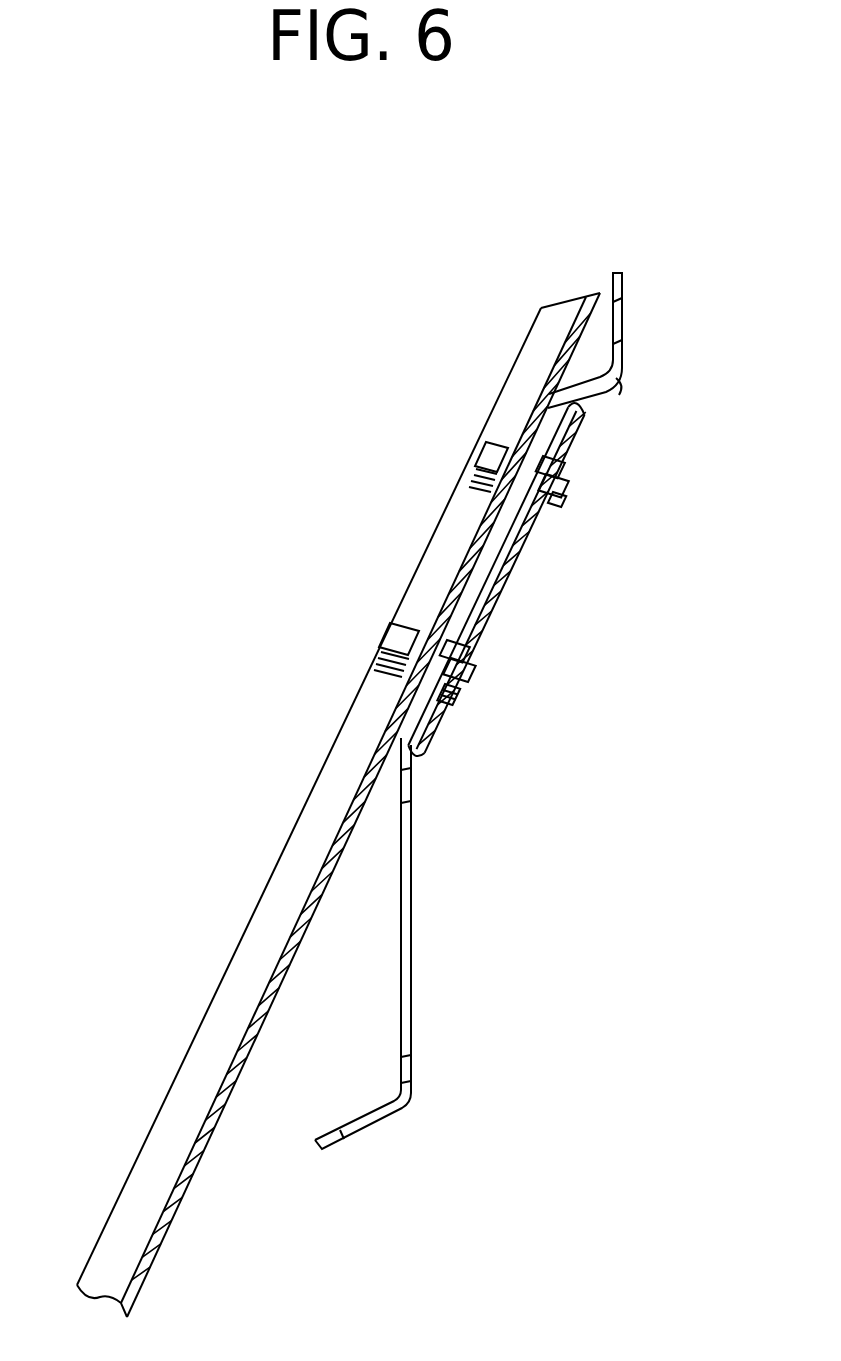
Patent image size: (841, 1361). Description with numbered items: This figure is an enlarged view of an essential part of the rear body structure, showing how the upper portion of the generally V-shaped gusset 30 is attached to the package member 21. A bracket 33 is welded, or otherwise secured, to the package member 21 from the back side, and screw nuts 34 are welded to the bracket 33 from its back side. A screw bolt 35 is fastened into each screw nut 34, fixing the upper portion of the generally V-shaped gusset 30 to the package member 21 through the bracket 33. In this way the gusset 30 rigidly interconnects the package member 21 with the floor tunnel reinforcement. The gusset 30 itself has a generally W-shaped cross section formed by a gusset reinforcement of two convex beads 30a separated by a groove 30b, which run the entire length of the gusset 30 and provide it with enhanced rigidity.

The package member 21 is at (622, 386).
The generally V-shaped gusset 30 is at (324, 805).
The convex bead 30a is at (306, 806).
The groove 30b is at (268, 984).
The bracket 33 is at (512, 576).
The screw nut 34 is at (566, 490).
The screw bolt 35 is at (476, 470).